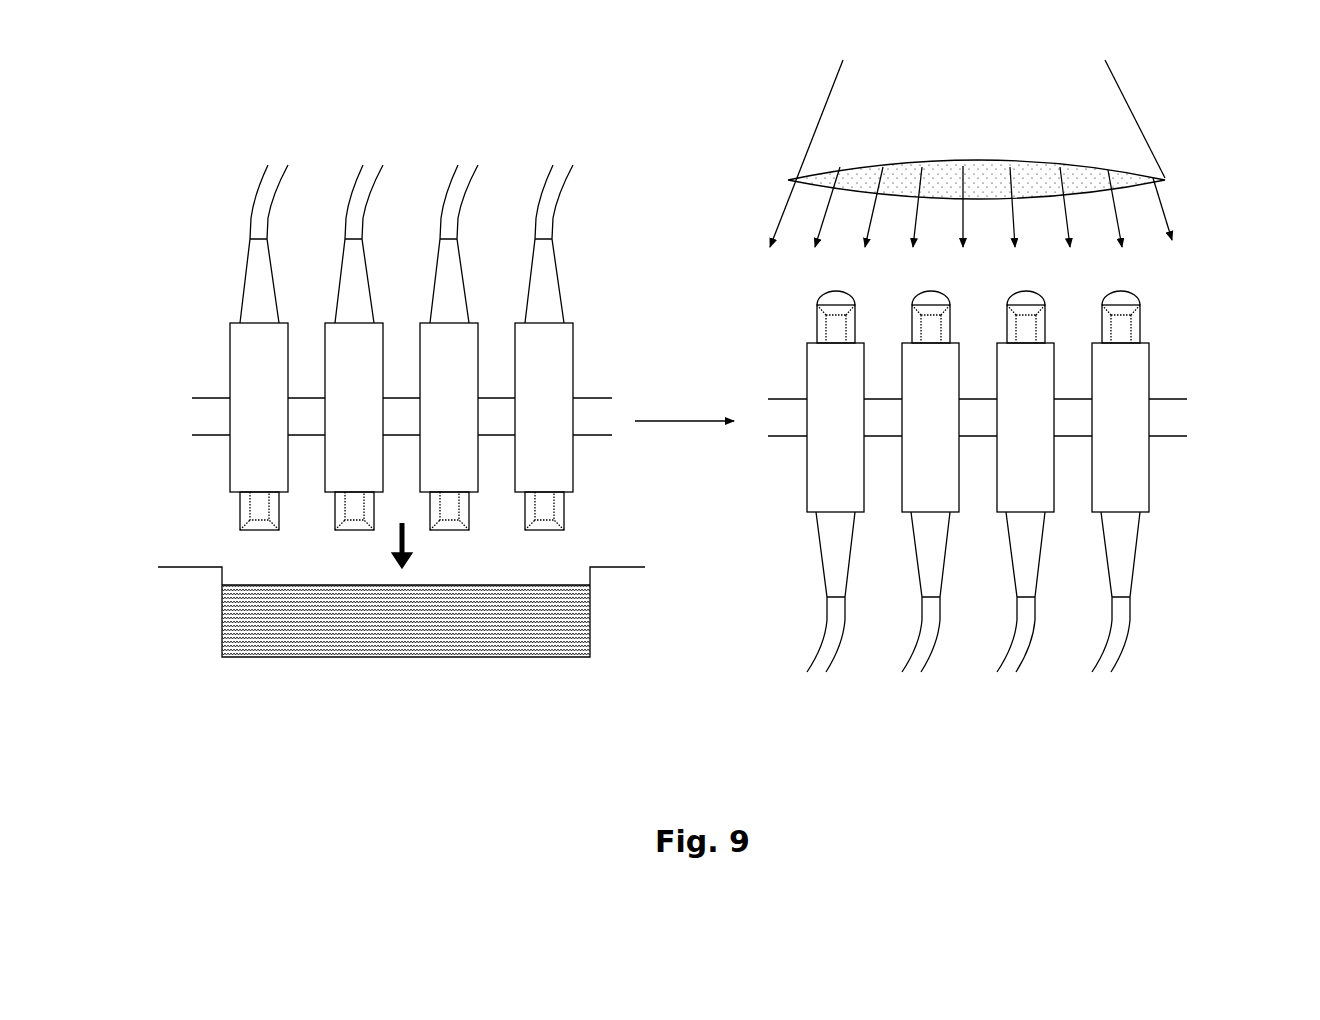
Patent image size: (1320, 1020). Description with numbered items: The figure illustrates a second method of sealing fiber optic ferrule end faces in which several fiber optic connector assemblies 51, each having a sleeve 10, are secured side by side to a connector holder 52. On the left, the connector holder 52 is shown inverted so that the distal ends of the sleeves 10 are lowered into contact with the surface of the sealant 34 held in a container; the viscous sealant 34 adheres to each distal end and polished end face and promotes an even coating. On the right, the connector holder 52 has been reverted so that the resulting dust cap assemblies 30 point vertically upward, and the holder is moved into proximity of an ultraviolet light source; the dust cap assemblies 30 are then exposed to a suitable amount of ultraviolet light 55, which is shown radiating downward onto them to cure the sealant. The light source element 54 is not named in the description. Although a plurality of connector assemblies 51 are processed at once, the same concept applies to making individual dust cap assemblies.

The sleeve 10 is at (243, 510).
The dust cap assembly 30 is at (806, 319).
The sealant 34 is at (398, 630).
The fiber optic connector assembly 51 is at (247, 353).
The connector holder 52 is at (1177, 423).
The light beam 54 is at (1107, 130).
The ultraviolet light 55 is at (1168, 212).